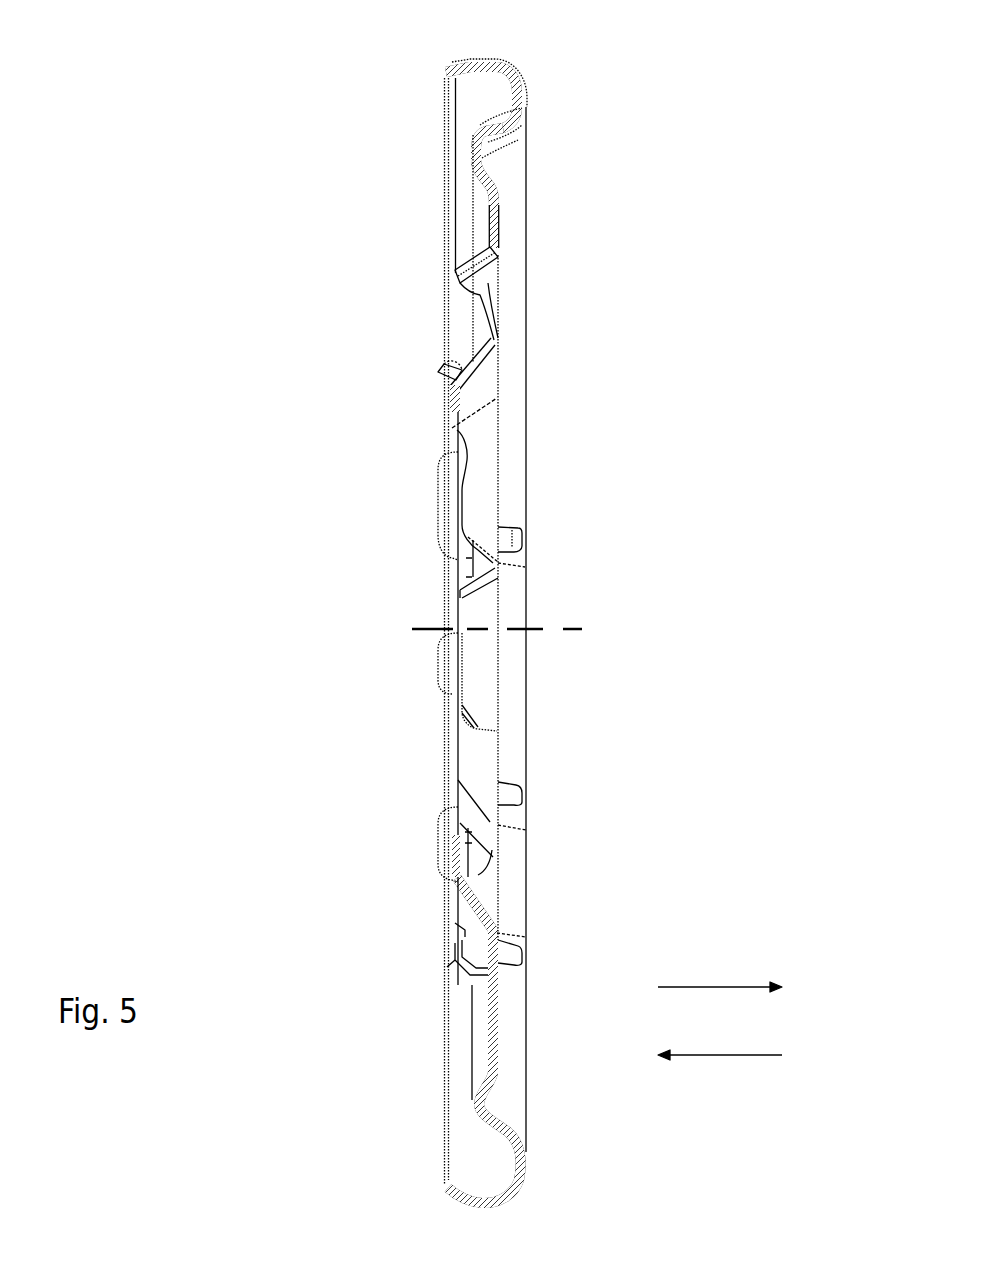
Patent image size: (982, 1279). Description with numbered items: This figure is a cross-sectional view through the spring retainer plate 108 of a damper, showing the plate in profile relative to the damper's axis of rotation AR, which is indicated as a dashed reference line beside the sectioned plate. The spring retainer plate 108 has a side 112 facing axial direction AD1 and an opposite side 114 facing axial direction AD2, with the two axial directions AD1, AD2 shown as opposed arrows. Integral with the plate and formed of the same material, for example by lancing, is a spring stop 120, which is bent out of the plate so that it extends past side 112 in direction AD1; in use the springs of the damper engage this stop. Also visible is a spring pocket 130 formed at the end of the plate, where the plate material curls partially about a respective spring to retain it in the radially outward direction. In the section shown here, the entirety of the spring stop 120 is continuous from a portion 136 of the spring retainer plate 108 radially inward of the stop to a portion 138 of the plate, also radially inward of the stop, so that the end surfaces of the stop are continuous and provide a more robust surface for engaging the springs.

The spring retainer plate 108 is at (553, 52).
The side 112 is at (479, 229).
The side 114 is at (508, 199).
The spring stop 120 is at (466, 143).
The spring pocket 130 is at (466, 1147).
The portion 136 is at (485, 203).
The portion 138 is at (496, 114).
The axis of rotation AR is at (567, 631).
The axial direction AD1 is at (718, 1055).
The axial direction AD2 is at (697, 987).